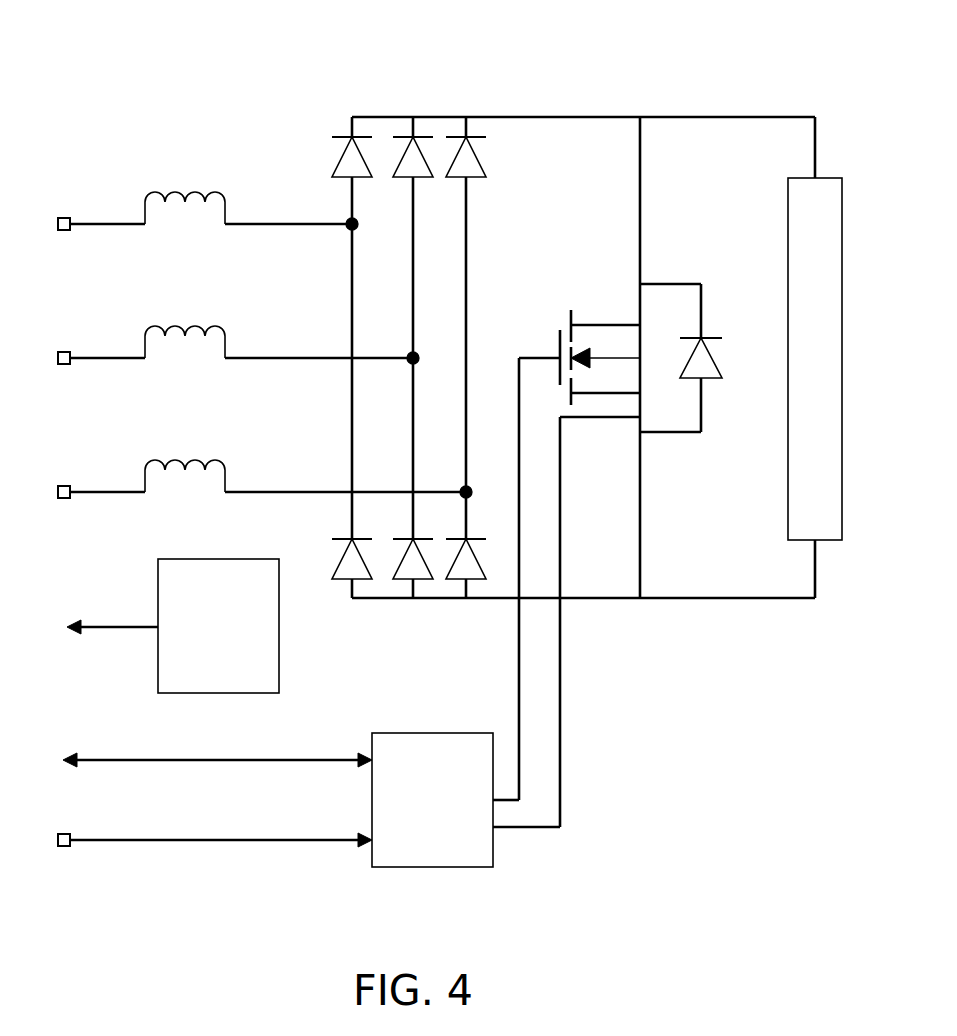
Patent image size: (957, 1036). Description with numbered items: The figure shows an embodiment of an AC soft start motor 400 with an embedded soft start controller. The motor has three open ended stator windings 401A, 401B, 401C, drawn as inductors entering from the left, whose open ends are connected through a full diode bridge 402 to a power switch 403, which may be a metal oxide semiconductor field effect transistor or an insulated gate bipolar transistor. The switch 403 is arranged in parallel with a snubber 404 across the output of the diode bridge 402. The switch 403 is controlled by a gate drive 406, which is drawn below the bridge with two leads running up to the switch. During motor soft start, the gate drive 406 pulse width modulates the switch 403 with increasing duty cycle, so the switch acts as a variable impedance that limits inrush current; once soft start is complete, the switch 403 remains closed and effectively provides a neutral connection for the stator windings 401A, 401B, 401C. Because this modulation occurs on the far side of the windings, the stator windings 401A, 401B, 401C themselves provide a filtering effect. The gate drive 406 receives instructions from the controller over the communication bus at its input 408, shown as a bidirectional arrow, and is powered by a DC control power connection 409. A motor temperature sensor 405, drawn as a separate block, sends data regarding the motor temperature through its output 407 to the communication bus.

The AC soft start motor 400 is at (38, 34).
The open ended stator winding 401A is at (206, 224).
The open ended stator winding 401B is at (163, 358).
The open ended stator winding 401C is at (163, 492).
The full diode bridge 402 is at (328, 537).
The power switch 403 is at (637, 340).
The snubber 404 is at (815, 357).
The motor temperature sensor 405 is at (202, 669).
The gate drive 406 is at (417, 831).
The output 407 is at (33, 636).
The input 408 is at (203, 769).
The DC control power connection 409 is at (203, 849).